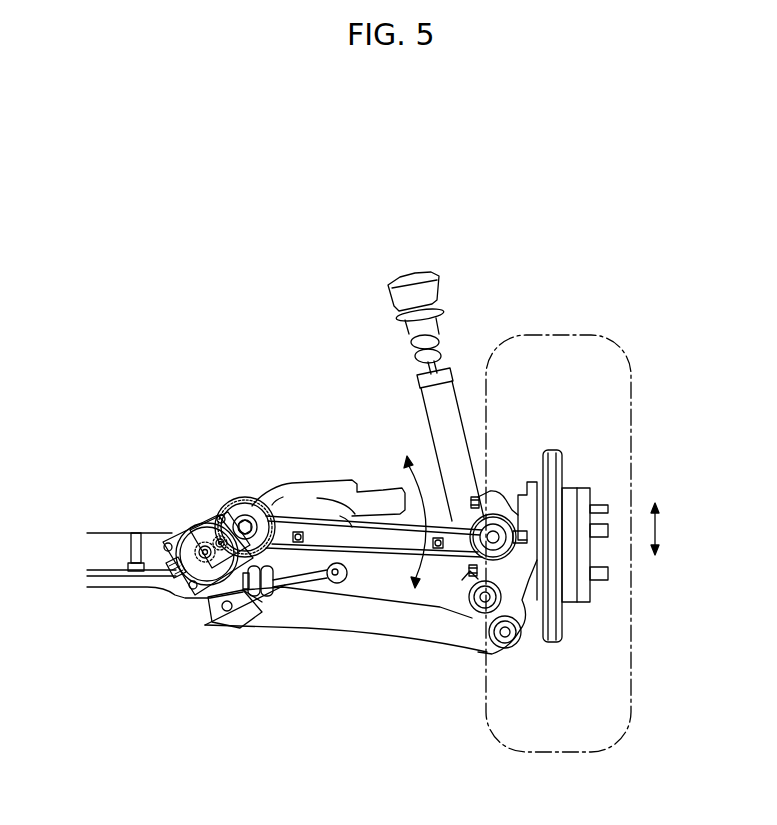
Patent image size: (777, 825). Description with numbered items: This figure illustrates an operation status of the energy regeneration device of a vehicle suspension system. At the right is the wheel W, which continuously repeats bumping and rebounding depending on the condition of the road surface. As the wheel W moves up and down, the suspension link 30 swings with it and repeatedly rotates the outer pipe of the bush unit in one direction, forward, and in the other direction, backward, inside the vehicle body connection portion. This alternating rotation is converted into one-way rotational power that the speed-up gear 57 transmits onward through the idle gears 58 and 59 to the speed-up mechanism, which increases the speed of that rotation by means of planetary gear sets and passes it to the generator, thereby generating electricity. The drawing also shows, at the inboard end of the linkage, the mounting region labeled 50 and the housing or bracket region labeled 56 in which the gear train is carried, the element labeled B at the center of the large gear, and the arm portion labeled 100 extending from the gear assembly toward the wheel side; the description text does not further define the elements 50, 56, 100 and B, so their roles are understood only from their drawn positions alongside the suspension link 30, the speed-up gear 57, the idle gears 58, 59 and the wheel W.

The suspension link 30 is at (367, 580).
The sub frame 50 is at (172, 597).
The gear housing 56 is at (240, 565).
The speed-up gear 57 is at (189, 526).
The idle gear 58 is at (212, 540).
The idle gear 59 is at (250, 499).
The upper arm 100 is at (307, 497).
The bolt B is at (243, 520).
The wheel W is at (585, 350).